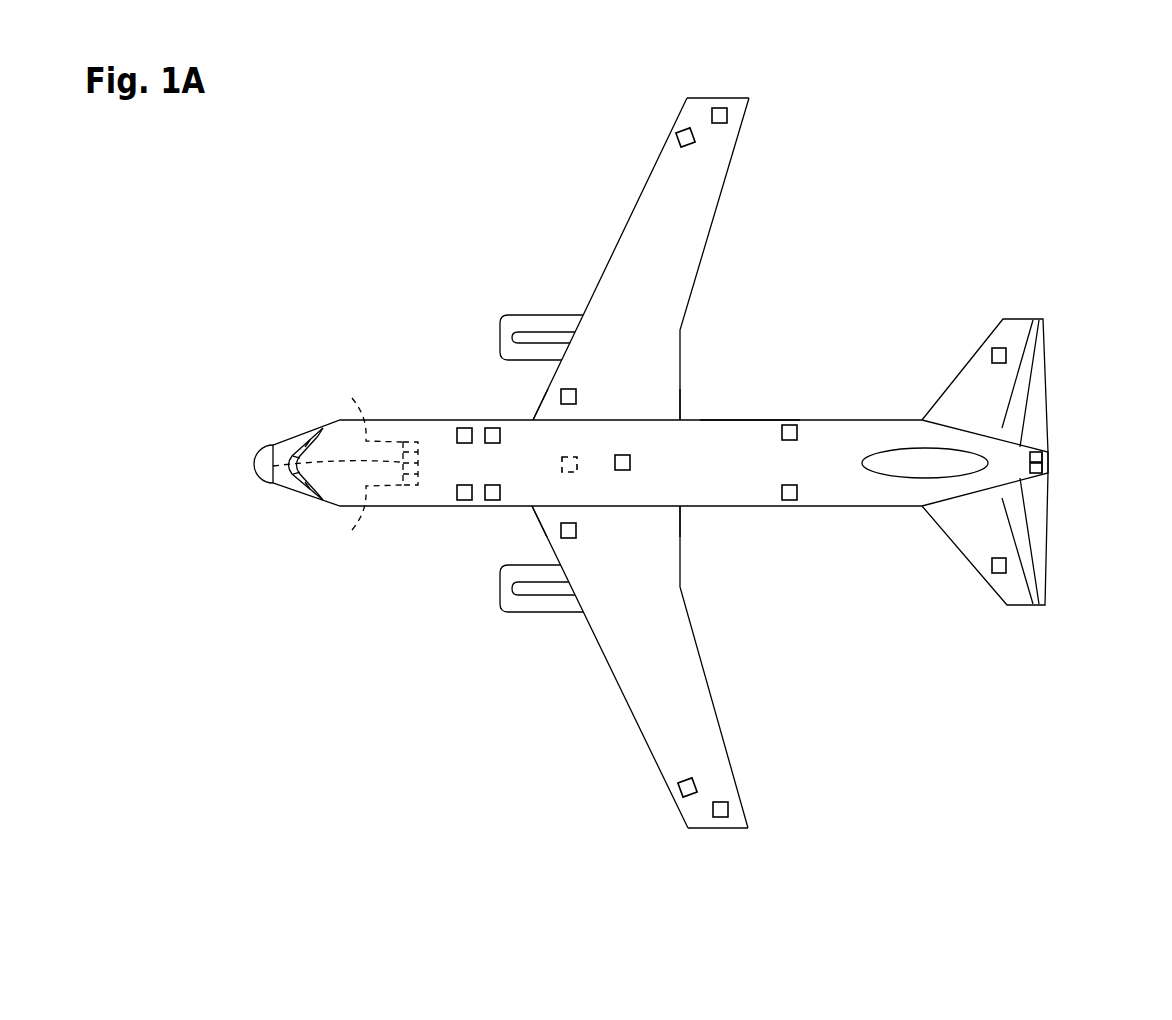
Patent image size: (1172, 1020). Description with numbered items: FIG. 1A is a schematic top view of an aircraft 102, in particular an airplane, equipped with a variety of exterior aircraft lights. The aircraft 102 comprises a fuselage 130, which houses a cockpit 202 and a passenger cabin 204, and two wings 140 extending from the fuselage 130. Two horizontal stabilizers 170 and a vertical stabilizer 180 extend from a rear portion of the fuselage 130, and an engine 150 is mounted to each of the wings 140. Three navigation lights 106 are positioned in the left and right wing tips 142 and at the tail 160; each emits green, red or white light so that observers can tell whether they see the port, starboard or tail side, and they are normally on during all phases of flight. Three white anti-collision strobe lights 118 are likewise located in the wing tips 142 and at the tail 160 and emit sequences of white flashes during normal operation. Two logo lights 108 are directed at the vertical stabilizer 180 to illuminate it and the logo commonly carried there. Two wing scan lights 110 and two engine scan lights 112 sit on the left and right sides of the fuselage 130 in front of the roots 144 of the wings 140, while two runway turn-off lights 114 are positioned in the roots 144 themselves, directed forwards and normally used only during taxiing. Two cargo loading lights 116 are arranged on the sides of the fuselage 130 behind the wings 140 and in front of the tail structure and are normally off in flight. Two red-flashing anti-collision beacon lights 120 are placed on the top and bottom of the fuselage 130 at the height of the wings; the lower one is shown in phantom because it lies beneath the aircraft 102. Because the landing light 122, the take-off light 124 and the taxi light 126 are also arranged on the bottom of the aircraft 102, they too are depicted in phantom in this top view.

The aircraft 102 is at (958, 217).
The navigation lights 106 is at (678, 137).
The logo lights 108 is at (992, 357).
The wing scan lights 110 is at (457, 435).
The engine scan lights 112 is at (491, 428).
The runway turn-off lights 114 is at (576, 396).
The cargo loading lights 116 is at (790, 425).
The white anti-collision strobe lights 118 is at (727, 115).
The red-flashing anti-collision beacon lights 120 is at (570, 456).
The landing light 122 is at (367, 525).
The take-off light 124 is at (367, 403).
The taxi light 126 is at (255, 466).
The fuselage 130 is at (855, 492).
The wings 140 is at (735, 192).
The wing tips 142 is at (733, 90).
The roots 144 is at (528, 393).
The engine 150 is at (530, 305).
The tail 160 is at (1056, 433).
The horizontal stabilizers 170 is at (1056, 332).
The vertical stabilizer 180 is at (887, 463).
The cockpit 202 is at (290, 430).
The passenger cabin 204 is at (748, 443).